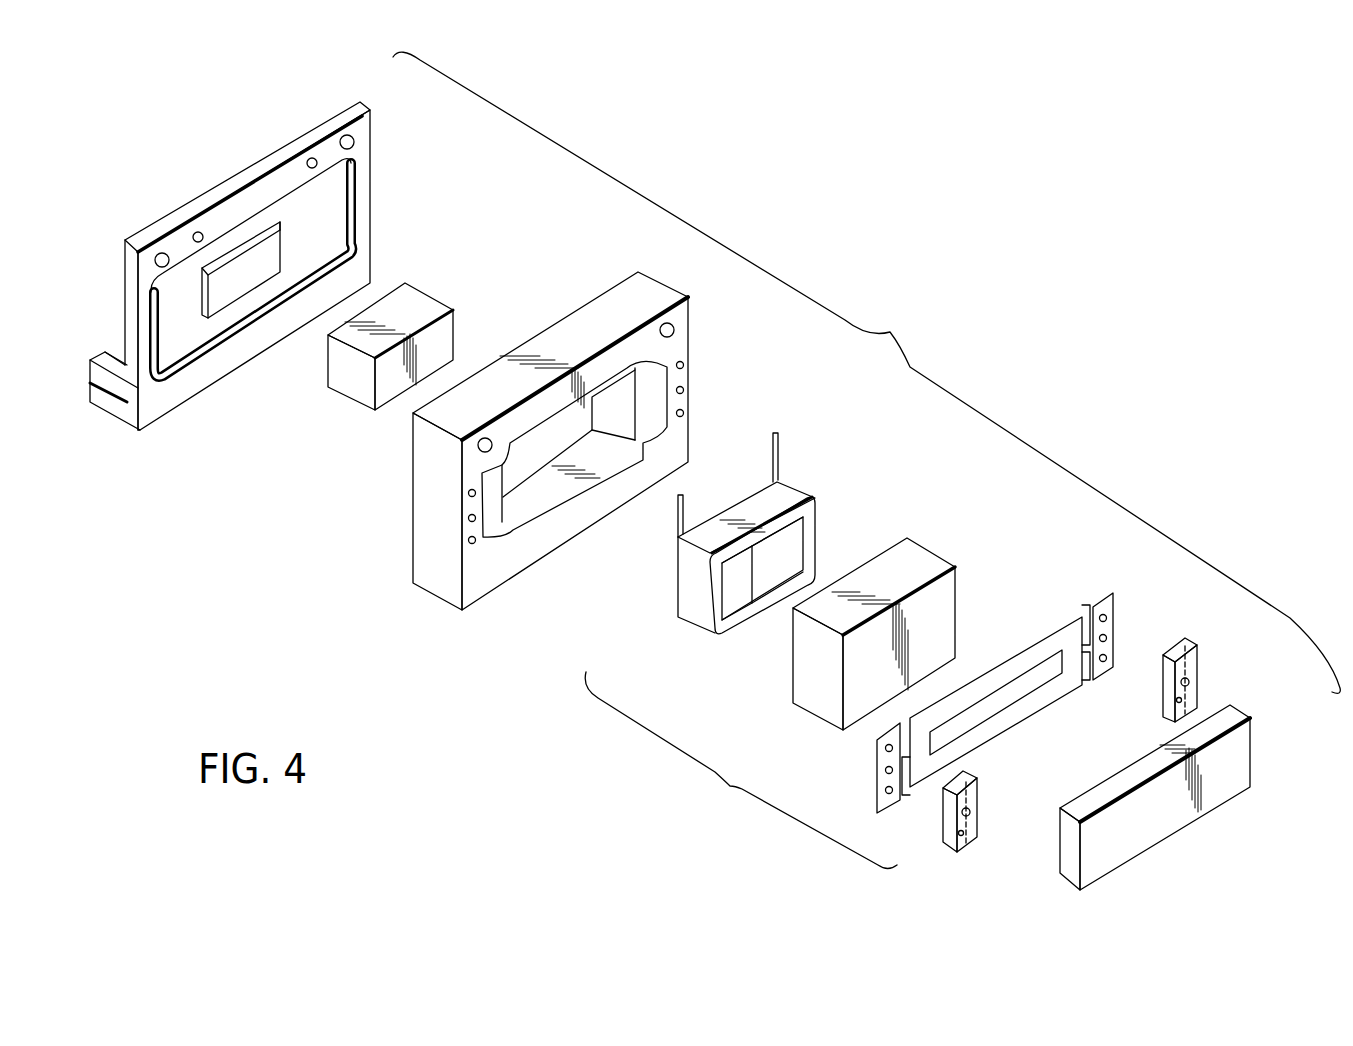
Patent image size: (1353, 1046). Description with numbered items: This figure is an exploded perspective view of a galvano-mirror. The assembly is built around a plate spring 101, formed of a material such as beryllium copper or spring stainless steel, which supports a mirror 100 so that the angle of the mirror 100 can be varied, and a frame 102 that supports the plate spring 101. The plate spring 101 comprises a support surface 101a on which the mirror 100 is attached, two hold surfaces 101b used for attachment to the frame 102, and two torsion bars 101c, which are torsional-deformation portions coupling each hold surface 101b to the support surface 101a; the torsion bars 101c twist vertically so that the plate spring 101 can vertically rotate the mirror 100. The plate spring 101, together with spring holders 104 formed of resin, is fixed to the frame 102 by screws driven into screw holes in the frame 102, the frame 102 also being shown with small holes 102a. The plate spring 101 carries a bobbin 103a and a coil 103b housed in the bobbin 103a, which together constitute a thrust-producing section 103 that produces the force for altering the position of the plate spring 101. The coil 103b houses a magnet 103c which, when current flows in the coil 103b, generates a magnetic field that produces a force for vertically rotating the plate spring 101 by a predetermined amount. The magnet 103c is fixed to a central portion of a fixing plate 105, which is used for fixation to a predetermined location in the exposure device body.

The mirror 100 is at (1167, 823).
The plate spring 101 is at (994, 698).
The support surface 101a is at (992, 672).
The hold surface 101b is at (1110, 607).
The torsion bar 101c is at (1088, 633).
The frame 102 is at (592, 315).
The small holes 102a is at (687, 388).
The thrust-producing section 103 is at (741, 770).
The bobbin 103a is at (932, 560).
The coil 103b is at (695, 620).
The magnet 103c is at (430, 307).
The spring holder 104 is at (1167, 687).
The fixing plate 105 is at (218, 373).